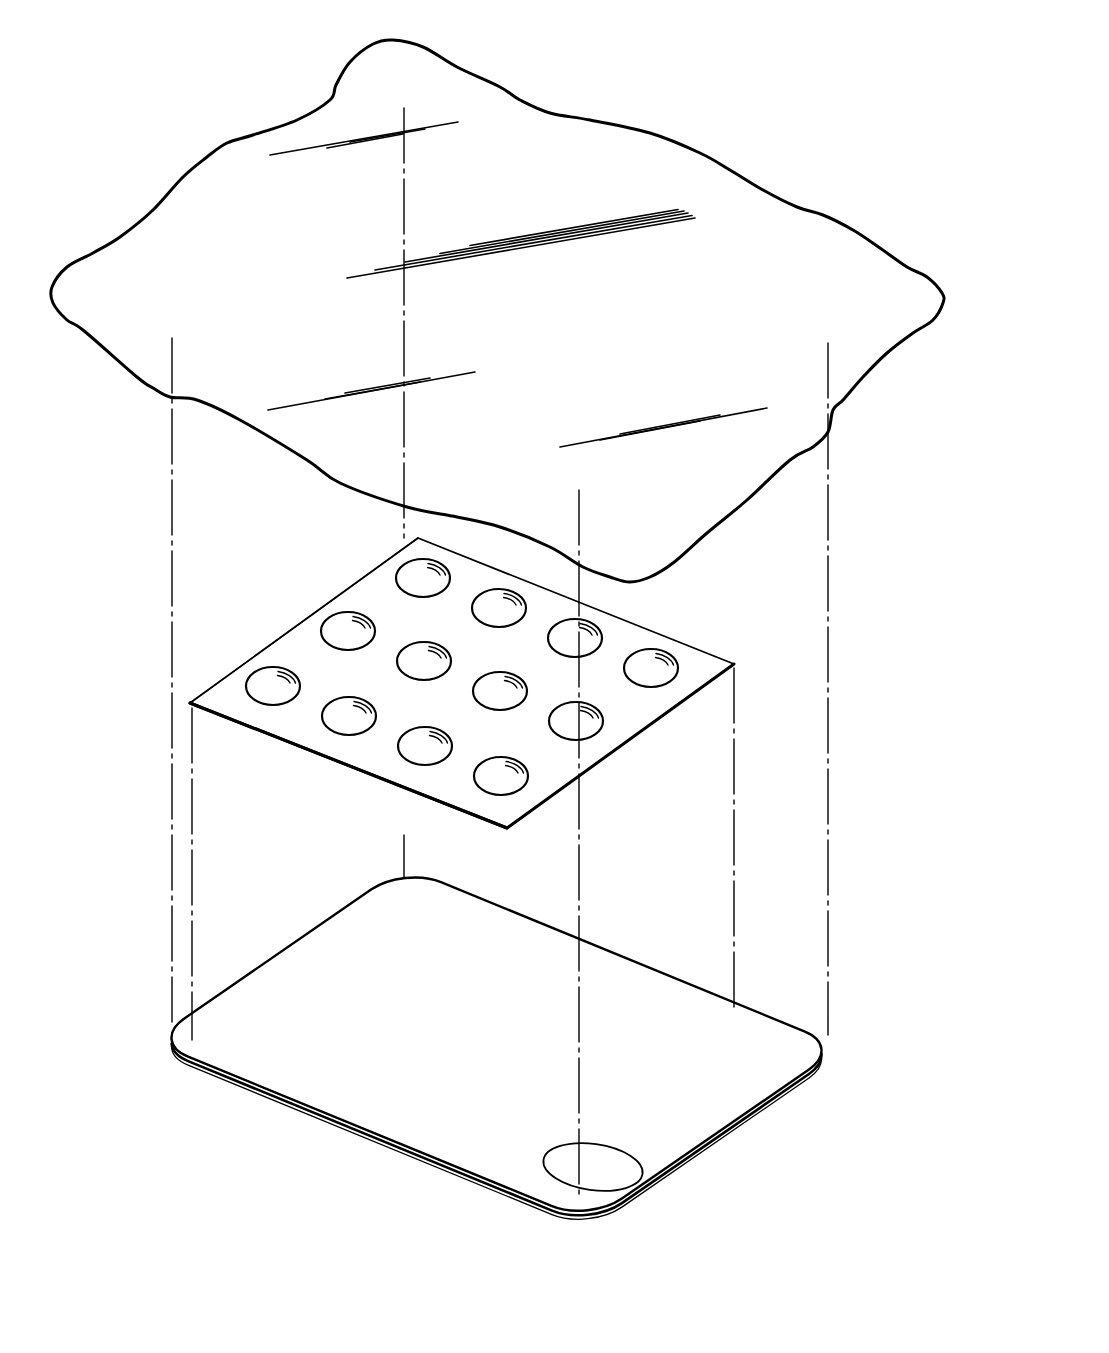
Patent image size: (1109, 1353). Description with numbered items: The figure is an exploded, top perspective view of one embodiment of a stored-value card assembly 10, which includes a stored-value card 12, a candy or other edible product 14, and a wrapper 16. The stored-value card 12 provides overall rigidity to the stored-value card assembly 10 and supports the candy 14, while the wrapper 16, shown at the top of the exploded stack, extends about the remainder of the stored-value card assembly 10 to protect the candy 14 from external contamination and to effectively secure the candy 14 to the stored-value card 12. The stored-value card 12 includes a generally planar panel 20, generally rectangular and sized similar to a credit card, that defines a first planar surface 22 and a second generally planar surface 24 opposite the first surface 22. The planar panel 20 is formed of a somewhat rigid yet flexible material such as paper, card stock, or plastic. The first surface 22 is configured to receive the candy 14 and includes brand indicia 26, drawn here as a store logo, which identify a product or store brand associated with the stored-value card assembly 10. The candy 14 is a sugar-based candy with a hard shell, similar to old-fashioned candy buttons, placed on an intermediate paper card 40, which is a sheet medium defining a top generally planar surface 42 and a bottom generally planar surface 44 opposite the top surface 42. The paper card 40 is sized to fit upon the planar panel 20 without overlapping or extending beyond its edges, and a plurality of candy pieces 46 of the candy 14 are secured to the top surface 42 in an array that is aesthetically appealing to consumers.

The stored-value card assembly 10 is at (790, 94).
The stored-value card 12 is at (496, 1058).
The candy 14 is at (253, 709).
The wrapper 16 is at (548, 143).
The planar panel 20 is at (717, 1118).
The first planar surface 22 is at (340, 1087).
The second generally planar surface 24 is at (428, 1165).
The brand indicia 26 is at (652, 1174).
The paper card 40 is at (462, 685).
The top generally planar surface 42 is at (243, 673).
The bottom generally planar surface 44 is at (295, 745).
The candy pieces 46 is at (410, 750).